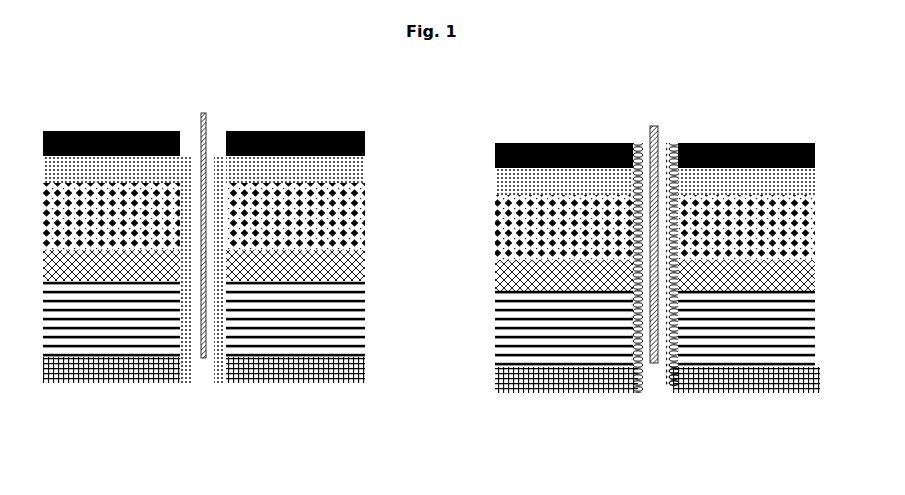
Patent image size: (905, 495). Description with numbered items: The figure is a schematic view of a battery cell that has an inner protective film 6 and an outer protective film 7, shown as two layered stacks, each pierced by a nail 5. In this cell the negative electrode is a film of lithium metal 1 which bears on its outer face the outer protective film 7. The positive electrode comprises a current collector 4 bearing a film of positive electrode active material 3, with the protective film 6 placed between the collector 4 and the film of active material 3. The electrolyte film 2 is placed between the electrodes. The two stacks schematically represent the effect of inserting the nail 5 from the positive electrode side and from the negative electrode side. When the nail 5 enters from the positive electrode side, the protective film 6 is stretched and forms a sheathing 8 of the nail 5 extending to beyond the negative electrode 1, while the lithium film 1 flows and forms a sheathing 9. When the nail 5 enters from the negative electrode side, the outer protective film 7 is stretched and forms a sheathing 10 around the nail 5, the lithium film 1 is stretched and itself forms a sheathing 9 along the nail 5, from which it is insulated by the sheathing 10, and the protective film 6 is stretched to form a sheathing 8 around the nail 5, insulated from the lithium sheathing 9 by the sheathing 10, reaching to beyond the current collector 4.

The lithium film constituting a negative electrode 1 is at (354, 305).
The electrolyte film 2 is at (366, 262).
The film of positive electrode active material 3 is at (488, 220).
The current collector of positive electrode 4 is at (366, 133).
The nail 5 is at (200, 103).
The protective film for a positive electrode 6 is at (354, 160).
The outer protective film 7 is at (557, 385).
The sheathing produced by stretching of a film 6 8 is at (208, 278).
The sheathing produced by flow of a lithium film 1 9 is at (212, 368).
The sheathing formed by stretching of a film 7 10 is at (659, 371).